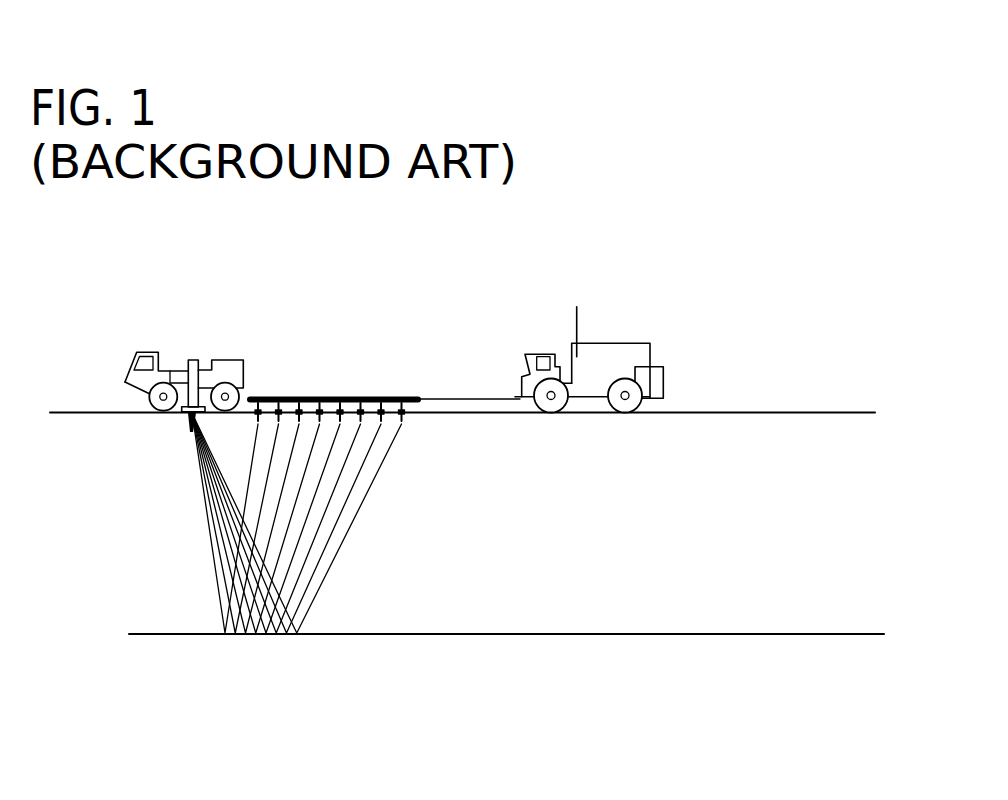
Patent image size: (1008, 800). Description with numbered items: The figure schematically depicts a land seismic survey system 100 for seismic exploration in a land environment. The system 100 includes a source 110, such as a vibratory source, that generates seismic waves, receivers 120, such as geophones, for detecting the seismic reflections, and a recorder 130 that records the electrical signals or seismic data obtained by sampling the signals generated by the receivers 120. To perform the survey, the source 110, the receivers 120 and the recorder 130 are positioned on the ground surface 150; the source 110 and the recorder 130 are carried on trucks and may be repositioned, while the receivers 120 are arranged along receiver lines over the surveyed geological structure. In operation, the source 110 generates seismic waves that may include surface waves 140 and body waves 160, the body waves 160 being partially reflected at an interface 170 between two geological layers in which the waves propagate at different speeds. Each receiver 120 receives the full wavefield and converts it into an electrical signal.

The land seismic survey system 100 is at (724, 87).
The source 110 is at (190, 360).
The receivers 120 is at (298, 396).
The recorder 130 is at (650, 343).
The surface waves 140 is at (256, 415).
The ground surface 150 is at (770, 413).
The body waves 160 is at (221, 509).
The interface 170 is at (770, 634).